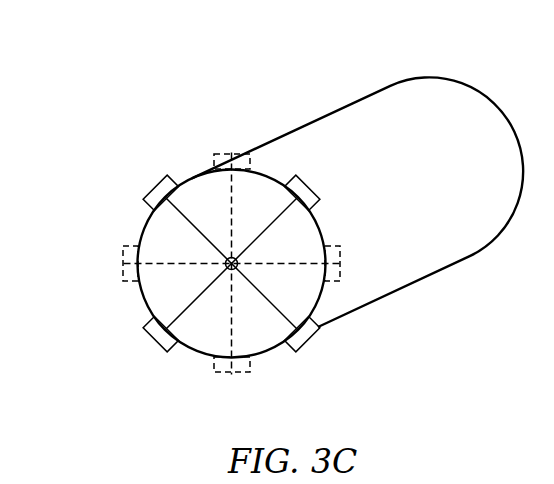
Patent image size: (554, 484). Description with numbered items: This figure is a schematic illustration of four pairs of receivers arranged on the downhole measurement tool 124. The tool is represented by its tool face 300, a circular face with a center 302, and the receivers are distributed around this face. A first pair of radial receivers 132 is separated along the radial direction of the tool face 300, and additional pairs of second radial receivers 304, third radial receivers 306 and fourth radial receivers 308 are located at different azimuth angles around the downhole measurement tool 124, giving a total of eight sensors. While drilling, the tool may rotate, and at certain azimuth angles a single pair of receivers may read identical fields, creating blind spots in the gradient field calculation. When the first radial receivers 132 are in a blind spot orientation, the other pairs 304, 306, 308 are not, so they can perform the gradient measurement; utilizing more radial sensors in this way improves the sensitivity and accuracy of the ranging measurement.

The downhole measurement tool 124 is at (374, 86).
The first radial receivers 132 is at (152, 192).
The tool face 300 is at (205, 334).
The center 302 is at (229, 258).
The second radial receivers 304 is at (307, 182).
The third radial receivers 306 is at (224, 153).
The fourth radial receivers 308 is at (123, 257).